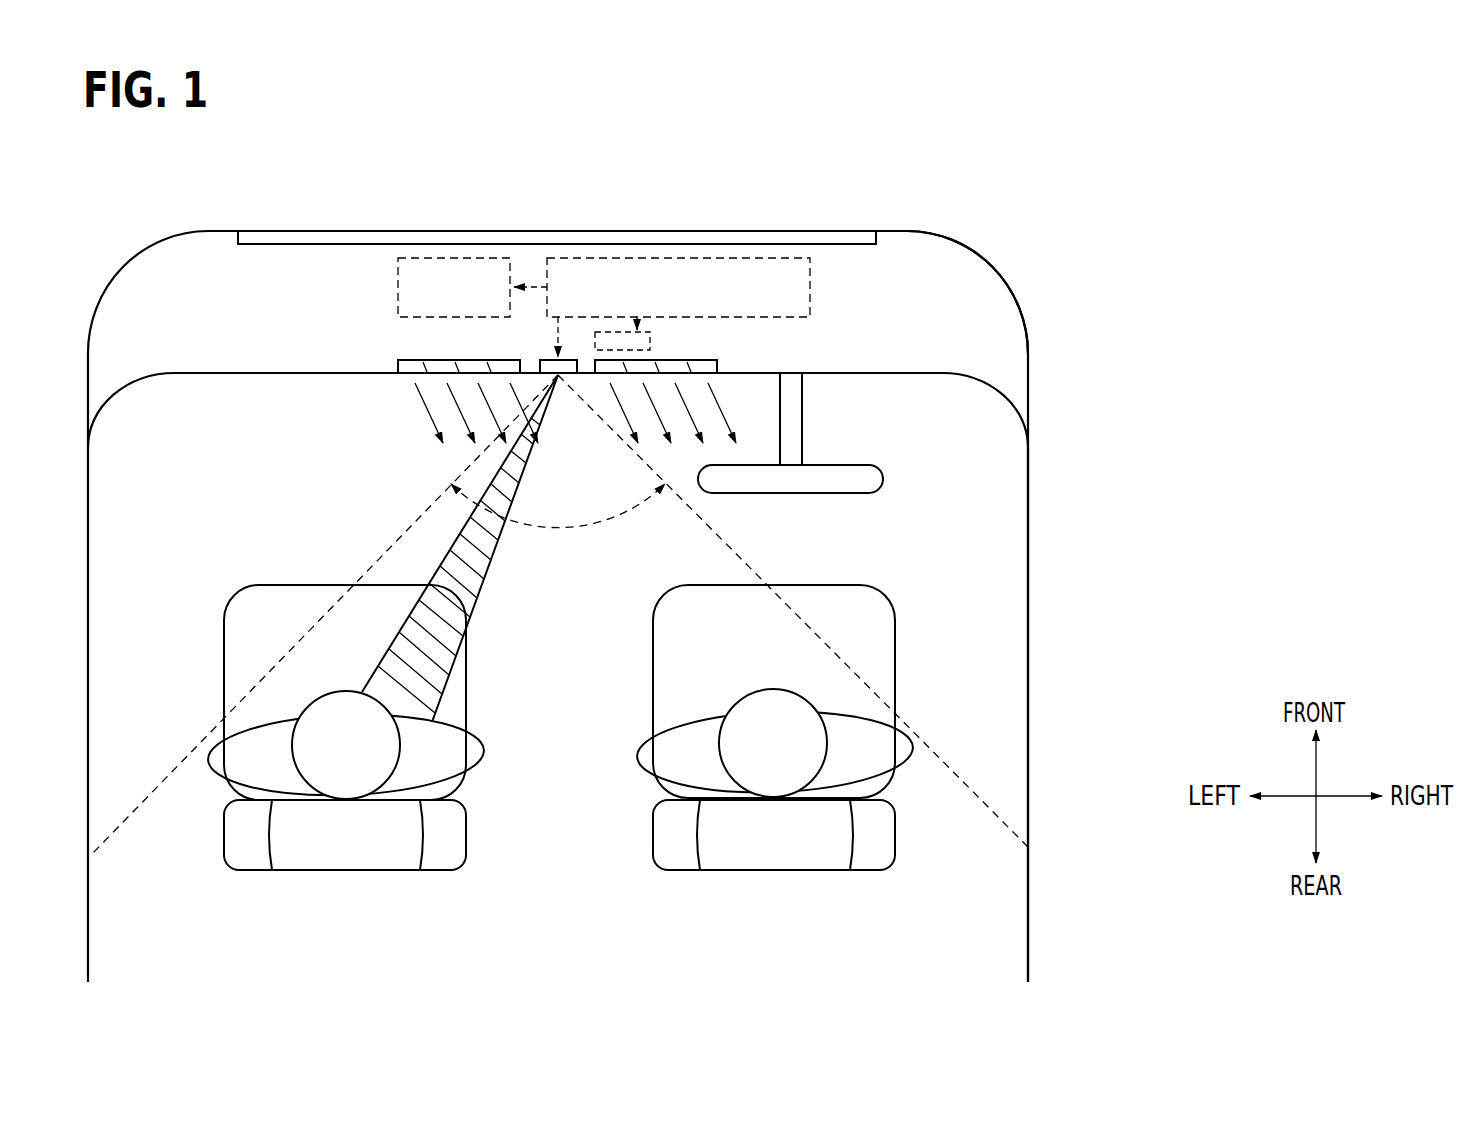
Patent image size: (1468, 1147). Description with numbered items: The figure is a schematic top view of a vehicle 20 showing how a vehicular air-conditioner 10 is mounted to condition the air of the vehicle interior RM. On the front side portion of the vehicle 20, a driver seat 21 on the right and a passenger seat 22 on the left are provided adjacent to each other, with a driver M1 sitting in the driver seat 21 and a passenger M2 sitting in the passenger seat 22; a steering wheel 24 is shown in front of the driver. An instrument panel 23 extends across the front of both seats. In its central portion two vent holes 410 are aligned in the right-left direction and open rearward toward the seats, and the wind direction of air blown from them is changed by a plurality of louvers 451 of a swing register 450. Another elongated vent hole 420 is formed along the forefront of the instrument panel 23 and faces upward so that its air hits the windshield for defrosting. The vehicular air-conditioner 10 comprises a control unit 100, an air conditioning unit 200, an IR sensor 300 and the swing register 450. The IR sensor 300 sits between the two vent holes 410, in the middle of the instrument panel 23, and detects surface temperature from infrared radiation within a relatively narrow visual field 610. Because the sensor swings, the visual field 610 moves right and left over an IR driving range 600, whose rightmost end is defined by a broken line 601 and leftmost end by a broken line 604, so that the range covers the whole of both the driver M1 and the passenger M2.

The vehicular air-conditioner 10 is at (592, 271).
The vehicle 20 is at (1028, 563).
The instrument panel 23 is at (987, 316).
The vehicle interior RM is at (998, 515).
The vent hole 420 is at (267, 244).
The steering wheel 24 is at (853, 495).
The air conditioning unit 200 is at (445, 257).
The control unit 100 is at (642, 257).
The swing register 450 is at (618, 332).
The IR sensor 300 is at (575, 366).
The vent holes 410 is at (412, 366).
The louver 451 is at (738, 145).
The broken line 604 is at (396, 537).
The broken line 601 is at (720, 537).
The IR driving range 600 is at (570, 528).
The visual field 610 is at (457, 543).
The passenger seat 22 is at (355, 853).
The driver seat 21 is at (780, 848).
The passenger M2 is at (468, 752).
The driver M1 is at (893, 752).